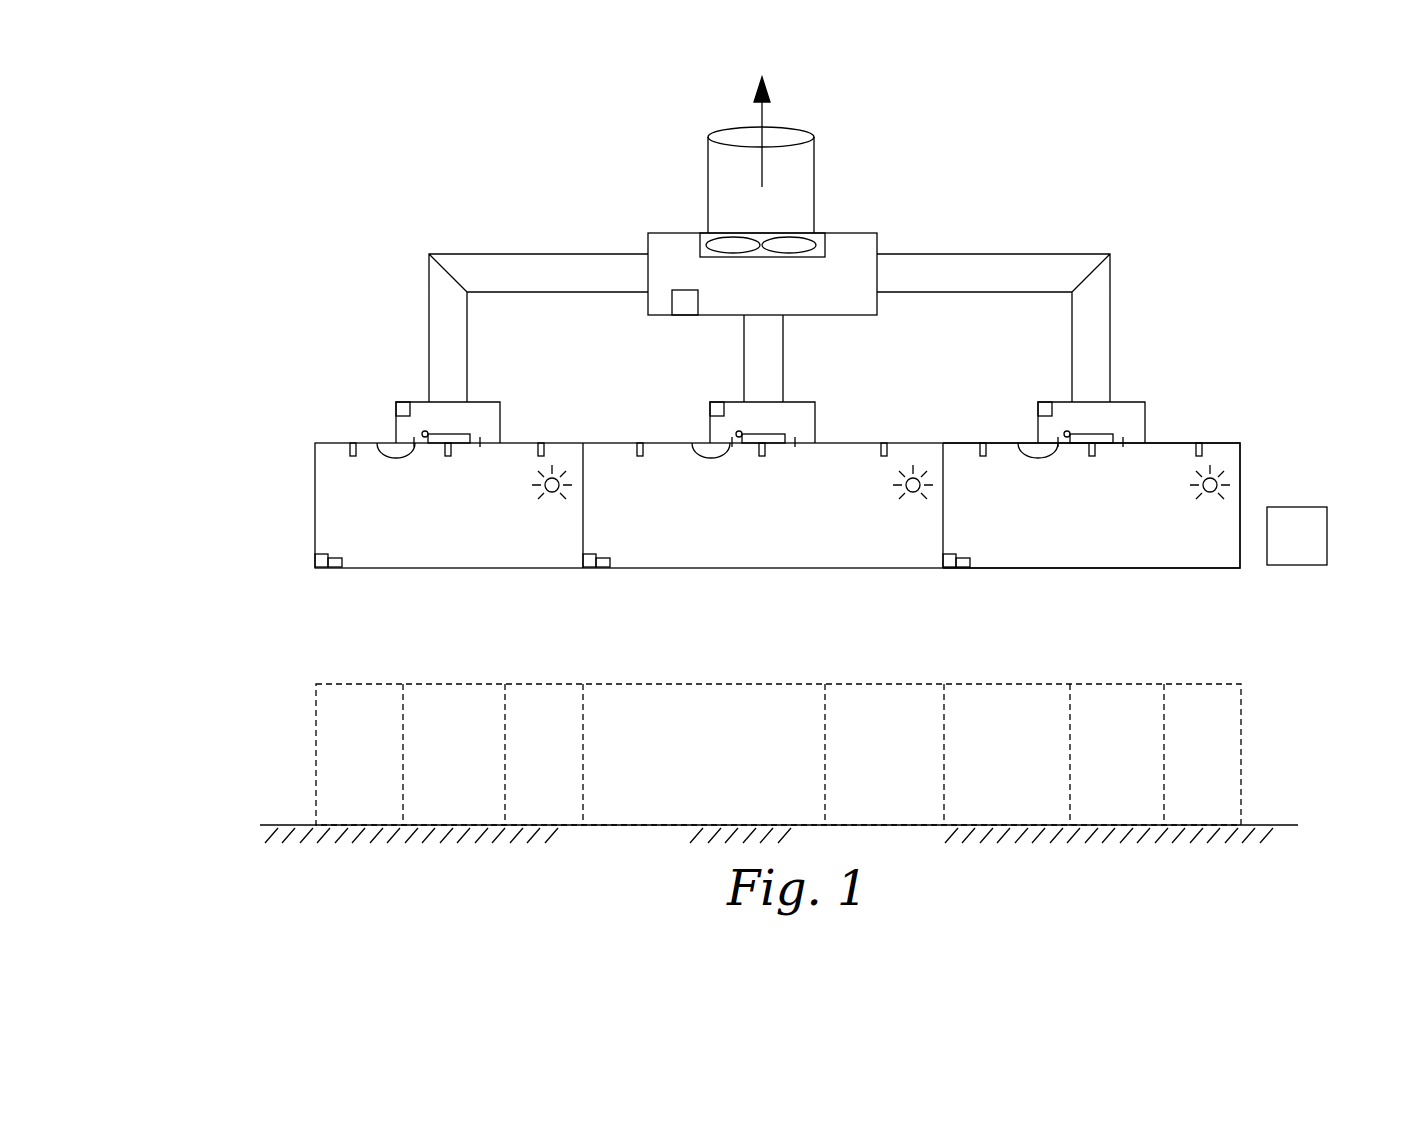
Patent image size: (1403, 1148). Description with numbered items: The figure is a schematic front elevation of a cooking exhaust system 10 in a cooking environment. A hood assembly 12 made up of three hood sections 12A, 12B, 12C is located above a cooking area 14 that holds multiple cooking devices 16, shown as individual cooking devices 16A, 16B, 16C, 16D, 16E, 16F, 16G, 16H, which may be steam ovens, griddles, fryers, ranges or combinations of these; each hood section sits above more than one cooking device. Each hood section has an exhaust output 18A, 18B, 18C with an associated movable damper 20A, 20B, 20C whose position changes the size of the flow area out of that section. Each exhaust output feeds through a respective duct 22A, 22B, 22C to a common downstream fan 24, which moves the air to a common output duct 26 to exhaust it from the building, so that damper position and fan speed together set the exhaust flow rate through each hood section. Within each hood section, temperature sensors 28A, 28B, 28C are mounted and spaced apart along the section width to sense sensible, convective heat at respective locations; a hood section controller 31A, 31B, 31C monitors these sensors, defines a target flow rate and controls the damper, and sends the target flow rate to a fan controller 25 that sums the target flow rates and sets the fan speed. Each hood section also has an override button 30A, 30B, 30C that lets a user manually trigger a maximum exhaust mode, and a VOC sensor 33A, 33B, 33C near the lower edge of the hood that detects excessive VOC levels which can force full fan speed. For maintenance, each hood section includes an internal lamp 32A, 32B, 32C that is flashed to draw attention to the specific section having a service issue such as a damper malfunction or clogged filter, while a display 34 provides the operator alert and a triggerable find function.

The cooking exhaust system 10 is at (1240, 201).
The hood assembly 12 is at (1250, 420).
The hood section 12A is at (427, 548).
The hood section 12B is at (774, 548).
The hood section 12C is at (1104, 548).
The cooking area 14 is at (1275, 678).
The cooking devices 16 is at (285, 740).
The cooking device 16A is at (344, 768).
The cooking device 16B is at (436, 768).
The cooking device 16C is at (523, 768).
The cooking device 16D is at (701, 768).
The cooking device 16E is at (875, 768).
The cooking device 16F is at (993, 768).
The cooking device 16G is at (1103, 768).
The cooking device 16H is at (1186, 768).
The exhaust output 18A is at (377, 443).
The exhaust output 18B is at (692, 443).
The exhaust output 18C is at (1018, 443).
The movable damper 20A is at (450, 440).
The movable damper 20B is at (765, 440).
The movable damper 20C is at (1095, 440).
The duct 22A is at (570, 262).
The duct 22B is at (767, 360).
The duct 22C is at (970, 265).
The fan 24 is at (788, 243).
The fan controller 25 is at (690, 300).
The output duct 26 is at (793, 183).
The temperature sensors 28A is at (541, 456).
The temperature sensors 28B is at (884, 456).
The temperature sensors 28C is at (1199, 456).
The override button 30A is at (320, 567).
The override button 30B is at (588, 567).
The override button 30C is at (950, 567).
The hood section controller 31A is at (396, 408).
The hood section controller 31B is at (710, 408).
The hood section controller 31C is at (1038, 408).
The lamp 32A is at (554, 494).
The lamp 32B is at (915, 494).
The lamp 32C is at (1212, 494).
The VOC sensor 33A is at (336, 567).
The VOC sensor 33B is at (604, 567).
The VOC sensor 33C is at (964, 567).
The display 34 is at (1292, 507).